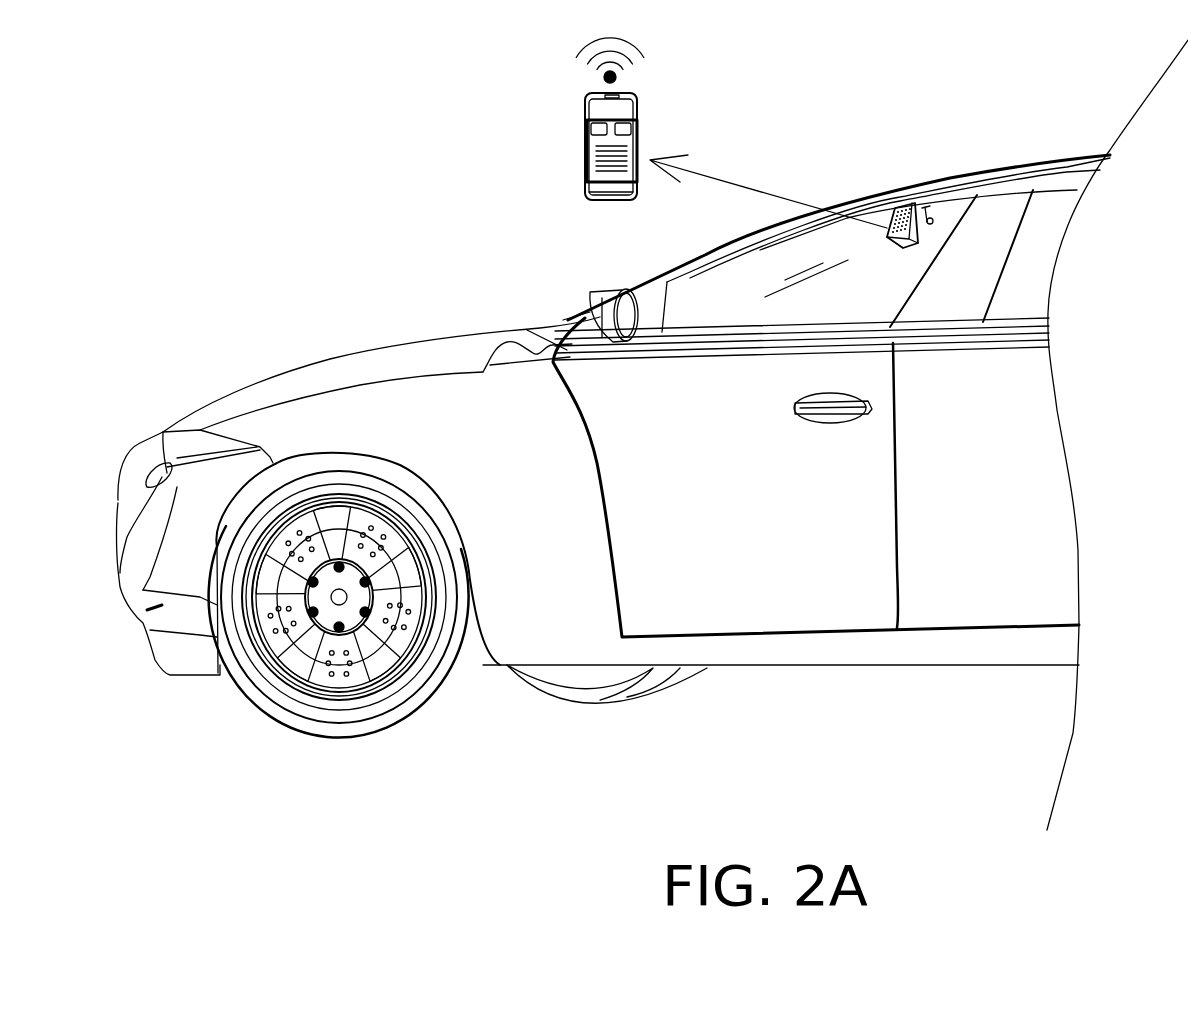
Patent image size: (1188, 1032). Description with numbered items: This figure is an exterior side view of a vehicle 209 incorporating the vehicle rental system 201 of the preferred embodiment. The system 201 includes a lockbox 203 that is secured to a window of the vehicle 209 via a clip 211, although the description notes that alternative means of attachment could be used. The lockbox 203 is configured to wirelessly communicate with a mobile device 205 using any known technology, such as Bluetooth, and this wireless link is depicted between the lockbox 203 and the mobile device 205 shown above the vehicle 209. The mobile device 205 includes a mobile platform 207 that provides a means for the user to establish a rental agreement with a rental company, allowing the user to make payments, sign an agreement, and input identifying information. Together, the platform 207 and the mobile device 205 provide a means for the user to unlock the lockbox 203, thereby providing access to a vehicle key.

The vehicle rental system 201 is at (220, 120).
The lockbox 203 is at (905, 210).
The mobile device 205 is at (637, 120).
The mobile platform 207 is at (588, 120).
The vehicle 209 is at (333, 357).
The clip 211 is at (927, 226).